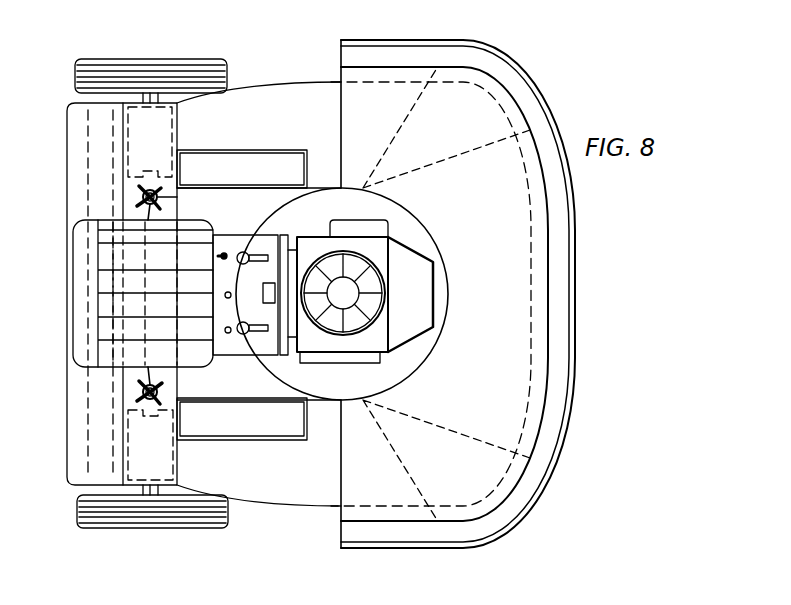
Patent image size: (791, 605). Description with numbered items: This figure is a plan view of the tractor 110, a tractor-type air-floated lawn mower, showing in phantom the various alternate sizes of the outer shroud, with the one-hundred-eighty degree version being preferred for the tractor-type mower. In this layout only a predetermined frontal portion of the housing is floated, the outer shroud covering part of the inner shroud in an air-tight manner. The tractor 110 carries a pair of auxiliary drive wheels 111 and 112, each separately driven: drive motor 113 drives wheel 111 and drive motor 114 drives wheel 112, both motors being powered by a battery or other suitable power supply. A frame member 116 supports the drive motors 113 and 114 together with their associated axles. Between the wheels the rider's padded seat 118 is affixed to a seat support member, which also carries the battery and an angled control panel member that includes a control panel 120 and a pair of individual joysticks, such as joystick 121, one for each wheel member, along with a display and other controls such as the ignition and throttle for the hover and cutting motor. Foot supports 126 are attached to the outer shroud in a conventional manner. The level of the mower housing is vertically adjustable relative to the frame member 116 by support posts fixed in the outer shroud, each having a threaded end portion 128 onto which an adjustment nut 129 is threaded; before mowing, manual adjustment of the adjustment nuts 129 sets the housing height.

The tractor 110 is at (308, 538).
The auxiliary drive wheel 111 is at (113, 57).
The auxiliary drive wheel 112 is at (113, 530).
The drive motor 113 is at (158, 172).
The drive motor 114 is at (150, 397).
The frame member 116 is at (118, 427).
The padded seat 118 is at (77, 338).
The control panel 120 is at (243, 251).
The joystick 121 is at (243, 335).
The foot supports 126 is at (282, 150).
The threaded end portion 128 is at (142, 192).
The adjustment nut 129 is at (172, 197).